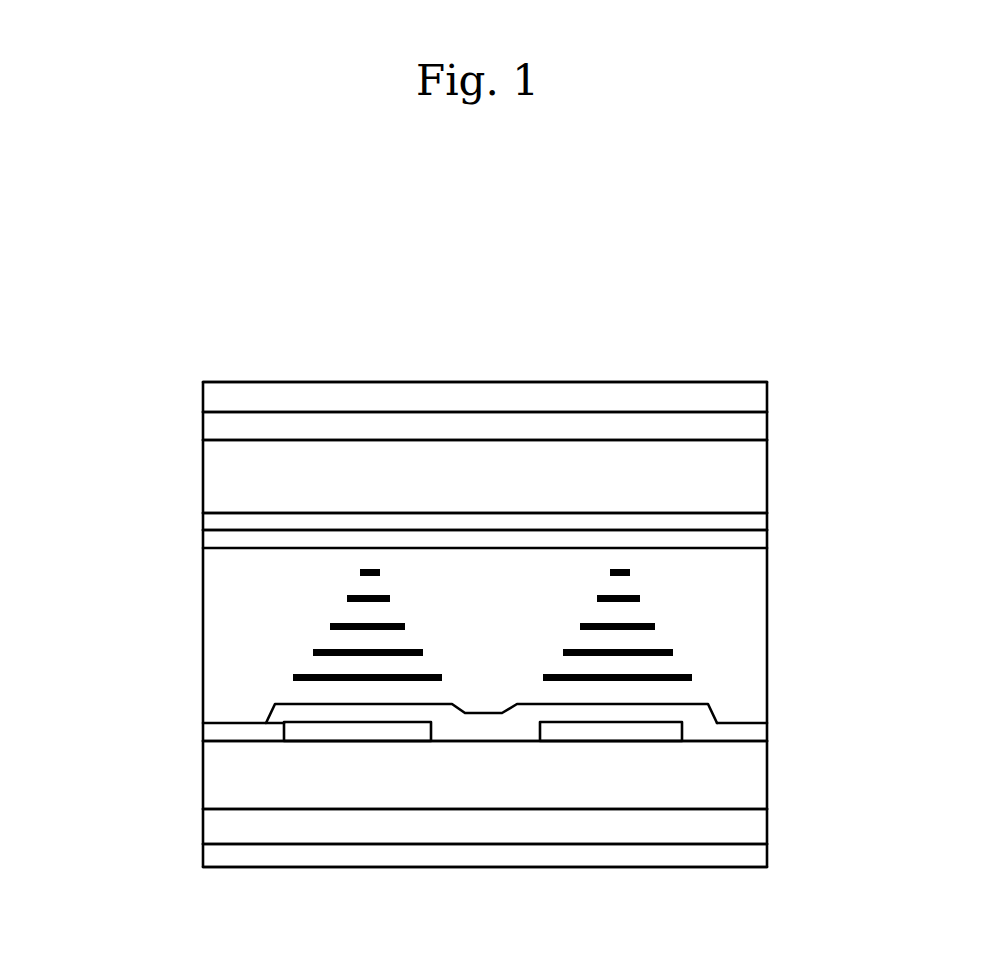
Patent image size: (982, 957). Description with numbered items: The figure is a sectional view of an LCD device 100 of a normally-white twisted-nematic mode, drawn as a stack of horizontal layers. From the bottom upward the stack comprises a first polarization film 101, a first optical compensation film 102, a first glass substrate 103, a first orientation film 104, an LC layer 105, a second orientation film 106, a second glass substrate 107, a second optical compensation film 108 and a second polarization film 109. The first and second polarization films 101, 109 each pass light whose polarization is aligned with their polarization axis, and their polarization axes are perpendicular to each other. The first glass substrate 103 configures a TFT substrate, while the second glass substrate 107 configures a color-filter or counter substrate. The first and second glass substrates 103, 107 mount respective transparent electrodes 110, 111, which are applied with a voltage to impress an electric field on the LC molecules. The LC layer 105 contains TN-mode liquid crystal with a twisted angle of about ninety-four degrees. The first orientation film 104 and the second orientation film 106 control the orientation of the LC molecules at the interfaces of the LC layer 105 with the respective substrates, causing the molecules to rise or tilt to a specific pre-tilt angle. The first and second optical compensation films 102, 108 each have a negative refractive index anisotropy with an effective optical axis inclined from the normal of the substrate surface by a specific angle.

The LCD device 100 is at (742, 296).
The first polarization film 101 is at (767, 855).
The first optical compensation film 102 is at (767, 827).
The first glass substrate 103 is at (485, 775).
The first orientation film 104 is at (203, 732).
The LC layer 105 is at (788, 548).
The second orientation film 106 is at (203, 540).
The second glass substrate 107 is at (485, 476).
The second optical compensation film 108 is at (767, 427).
The second polarization film 109 is at (767, 395).
The transparent electrode 110 is at (313, 732).
The transparent electrode 111 is at (203, 520).